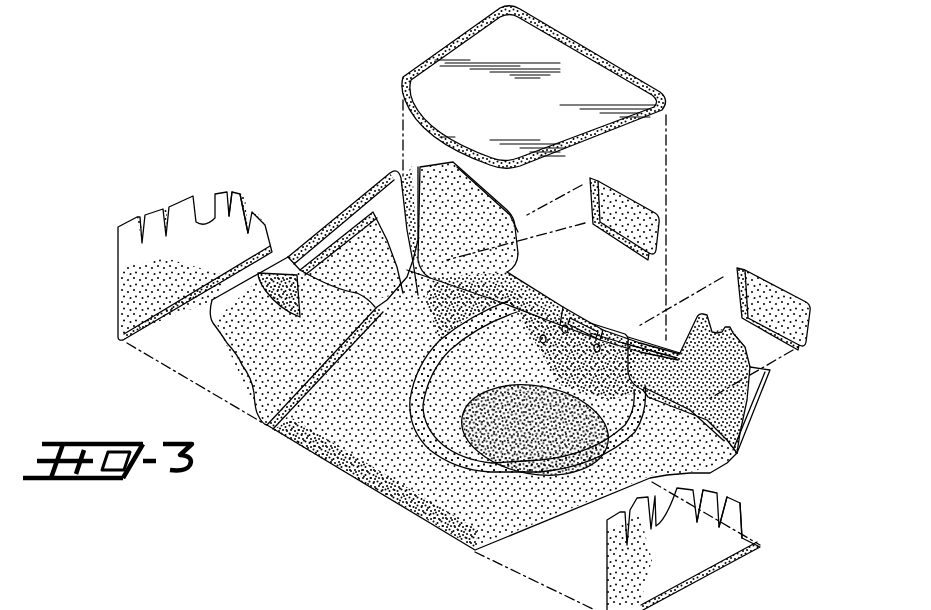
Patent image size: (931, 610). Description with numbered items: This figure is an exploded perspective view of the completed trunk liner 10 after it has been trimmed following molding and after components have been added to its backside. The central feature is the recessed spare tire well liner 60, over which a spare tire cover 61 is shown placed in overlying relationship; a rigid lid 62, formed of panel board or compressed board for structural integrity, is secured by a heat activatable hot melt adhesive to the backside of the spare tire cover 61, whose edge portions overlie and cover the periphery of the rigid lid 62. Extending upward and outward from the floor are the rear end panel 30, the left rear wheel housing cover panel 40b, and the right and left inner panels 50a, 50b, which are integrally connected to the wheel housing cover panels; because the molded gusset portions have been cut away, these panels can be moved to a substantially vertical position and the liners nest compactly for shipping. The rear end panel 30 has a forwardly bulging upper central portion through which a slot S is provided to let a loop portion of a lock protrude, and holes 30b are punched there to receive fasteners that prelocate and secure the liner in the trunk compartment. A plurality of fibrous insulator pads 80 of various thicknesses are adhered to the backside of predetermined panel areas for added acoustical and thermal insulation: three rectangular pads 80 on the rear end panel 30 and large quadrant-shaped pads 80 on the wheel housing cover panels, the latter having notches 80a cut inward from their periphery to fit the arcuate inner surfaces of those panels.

The trunk liner 10 is at (757, 147).
The rear end panel 30 is at (537, 290).
The holes 30b is at (590, 323).
The left rear wheel housing cover panel 40b is at (257, 367).
The right inner panel 50a is at (762, 400).
The left inner panel 50b is at (395, 170).
The spare tire well liner 60 is at (466, 408).
The spare tire cover 61 is at (572, 36).
The rigid lid 62 is at (598, 80).
The insulator pads 80 is at (127, 270).
The notches 80a is at (252, 220).
The slot S is at (592, 320).